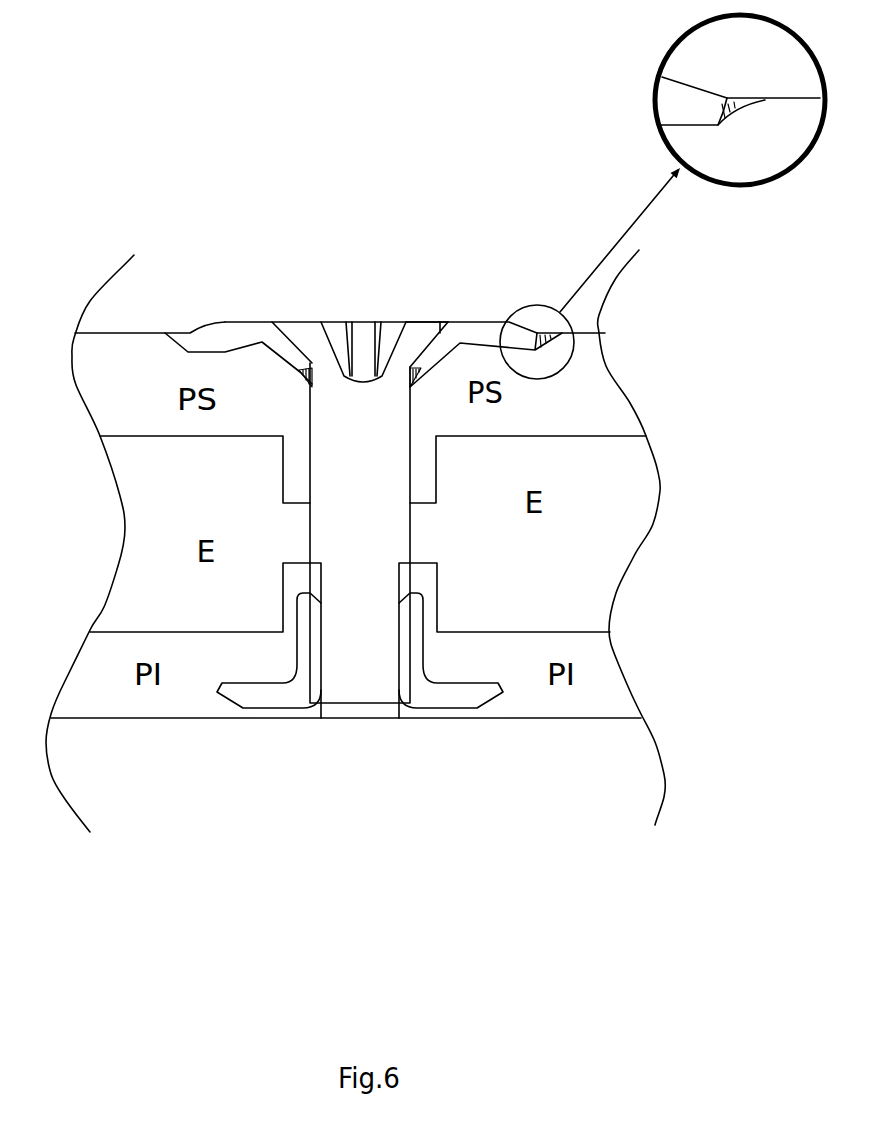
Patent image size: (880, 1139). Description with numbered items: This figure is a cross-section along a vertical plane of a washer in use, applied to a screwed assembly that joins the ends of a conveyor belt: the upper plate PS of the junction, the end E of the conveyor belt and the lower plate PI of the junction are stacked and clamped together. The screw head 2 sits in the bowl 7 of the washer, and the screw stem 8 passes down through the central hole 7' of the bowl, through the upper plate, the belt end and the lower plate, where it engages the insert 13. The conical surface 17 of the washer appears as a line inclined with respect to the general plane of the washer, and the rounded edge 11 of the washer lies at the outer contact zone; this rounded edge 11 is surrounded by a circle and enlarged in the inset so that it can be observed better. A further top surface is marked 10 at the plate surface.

The screw head 2 is at (418, 332).
The bowl 7 is at (360, 272).
The central hole 7' is at (328, 394).
The screw stem 8 is at (357, 535).
The top surface 10 is at (223, 331).
The rounded edge 11 is at (188, 352).
The insert 13 is at (425, 692).
The conical surface 17 is at (203, 329).